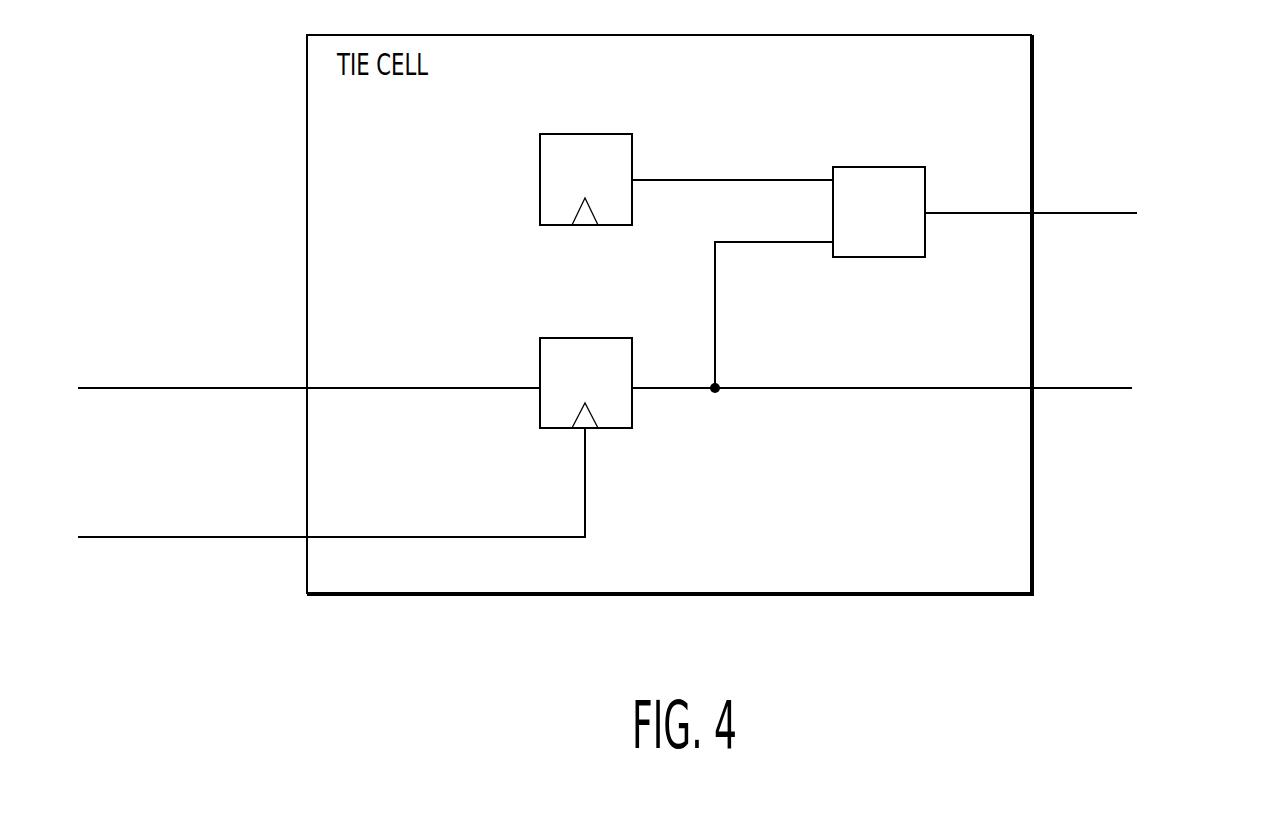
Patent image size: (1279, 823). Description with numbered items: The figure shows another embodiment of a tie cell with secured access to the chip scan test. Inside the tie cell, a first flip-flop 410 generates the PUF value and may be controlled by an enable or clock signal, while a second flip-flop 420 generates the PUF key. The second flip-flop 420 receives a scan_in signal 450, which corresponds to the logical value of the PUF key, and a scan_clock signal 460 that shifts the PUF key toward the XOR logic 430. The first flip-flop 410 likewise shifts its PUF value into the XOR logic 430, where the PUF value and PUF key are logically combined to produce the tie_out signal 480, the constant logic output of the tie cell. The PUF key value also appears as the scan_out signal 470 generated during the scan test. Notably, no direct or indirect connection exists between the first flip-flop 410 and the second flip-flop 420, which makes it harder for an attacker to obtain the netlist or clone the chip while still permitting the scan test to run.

The first flip-flop 410 is at (540, 165).
The second flip-flop 420 is at (637, 417).
The XOR logic 430 is at (868, 167).
The scan_in signal 450 is at (240, 388).
The scan_clock signal 460 is at (230, 537).
The scan_out signal 470 is at (1098, 388).
The tie_out signal 480 is at (1088, 213).